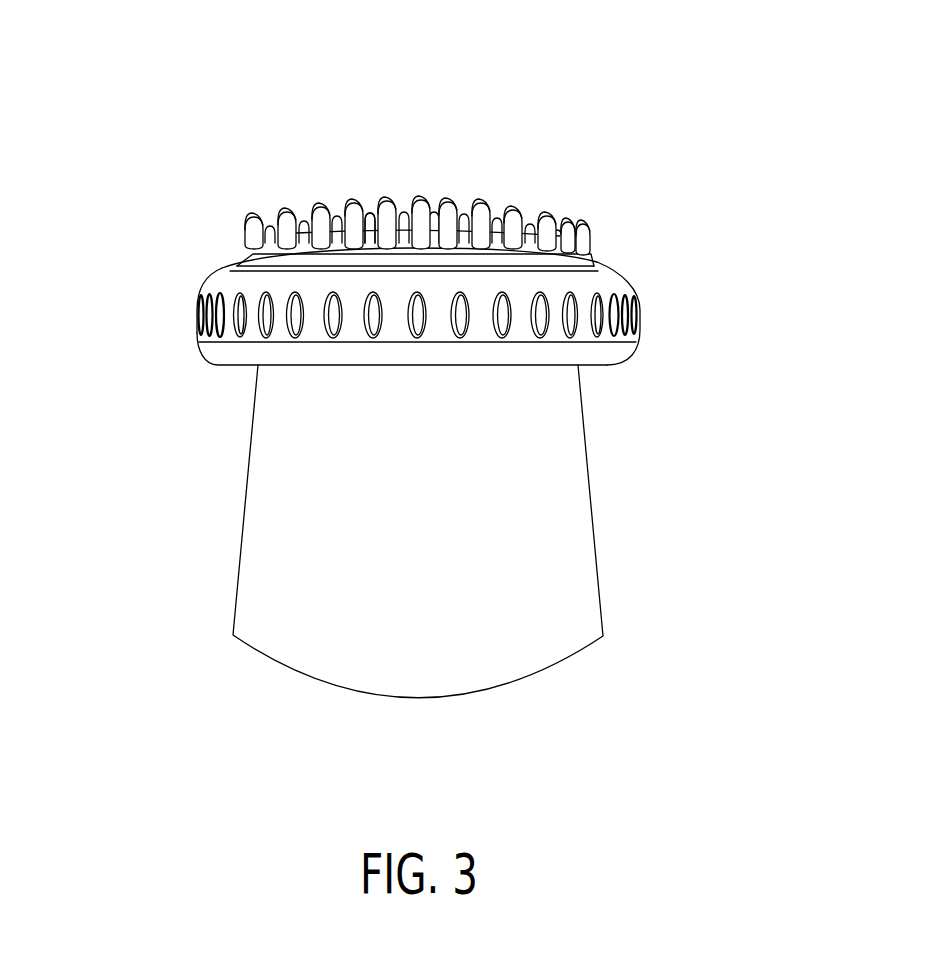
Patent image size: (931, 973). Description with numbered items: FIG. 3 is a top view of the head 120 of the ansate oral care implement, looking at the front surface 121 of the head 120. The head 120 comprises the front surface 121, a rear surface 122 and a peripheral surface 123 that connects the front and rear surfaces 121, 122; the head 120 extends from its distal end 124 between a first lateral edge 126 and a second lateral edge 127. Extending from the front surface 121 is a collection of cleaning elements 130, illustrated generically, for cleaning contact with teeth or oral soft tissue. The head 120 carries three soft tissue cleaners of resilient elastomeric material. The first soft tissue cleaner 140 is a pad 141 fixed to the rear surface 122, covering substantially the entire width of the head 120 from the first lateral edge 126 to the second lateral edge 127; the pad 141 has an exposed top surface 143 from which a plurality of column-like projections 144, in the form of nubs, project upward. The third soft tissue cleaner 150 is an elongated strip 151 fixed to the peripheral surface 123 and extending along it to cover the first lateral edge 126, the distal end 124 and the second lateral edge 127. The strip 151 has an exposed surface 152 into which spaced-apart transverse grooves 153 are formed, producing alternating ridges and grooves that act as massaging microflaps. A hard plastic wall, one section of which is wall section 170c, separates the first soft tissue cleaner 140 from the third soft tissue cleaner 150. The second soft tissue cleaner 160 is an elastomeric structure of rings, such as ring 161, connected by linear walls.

The head 120 is at (671, 101).
The front surface 121 is at (319, 378).
The rear surface 122 is at (339, 214).
The peripheral surface 123 is at (641, 312).
The distal end 124 is at (484, 219).
The first lateral edge 126 is at (235, 263).
The second lateral edge 127 is at (604, 259).
The collection of cleaning elements 130 is at (606, 553).
The first soft tissue cleaner 140 is at (602, 229).
The pad 141 is at (290, 268).
The top surface 143 is at (390, 209).
The projections 144 is at (549, 217).
The third soft tissue cleaner 150 is at (216, 288).
The elongated strip 151 is at (591, 356).
The exposed surface 152 is at (624, 279).
The grooves 153 is at (300, 324).
The second soft tissue cleaner 160 is at (366, 200).
The ring 161 is at (403, 213).
The wall section 170c is at (548, 262).